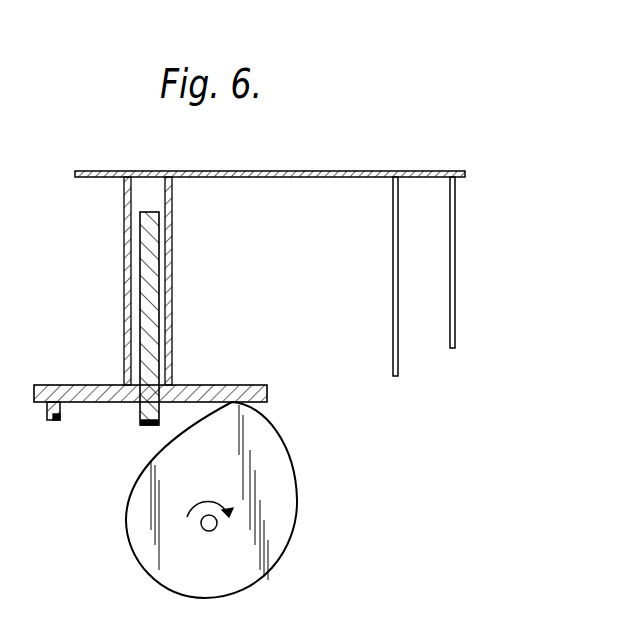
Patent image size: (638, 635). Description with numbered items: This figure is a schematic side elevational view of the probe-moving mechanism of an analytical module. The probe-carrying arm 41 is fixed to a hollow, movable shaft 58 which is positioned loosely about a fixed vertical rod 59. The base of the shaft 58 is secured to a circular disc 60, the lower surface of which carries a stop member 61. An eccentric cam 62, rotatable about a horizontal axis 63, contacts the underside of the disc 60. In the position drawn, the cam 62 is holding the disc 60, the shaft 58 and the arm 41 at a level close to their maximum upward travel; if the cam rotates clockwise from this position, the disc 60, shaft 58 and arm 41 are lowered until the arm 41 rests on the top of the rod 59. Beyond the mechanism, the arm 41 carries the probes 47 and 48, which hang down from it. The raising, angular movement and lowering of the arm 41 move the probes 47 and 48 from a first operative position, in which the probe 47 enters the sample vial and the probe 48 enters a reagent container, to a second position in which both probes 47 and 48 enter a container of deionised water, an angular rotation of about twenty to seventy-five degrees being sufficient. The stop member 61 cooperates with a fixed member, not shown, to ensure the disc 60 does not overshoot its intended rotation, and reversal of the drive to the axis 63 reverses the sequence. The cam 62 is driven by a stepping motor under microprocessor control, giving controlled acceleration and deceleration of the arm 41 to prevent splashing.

The probe-carrying arm 41 is at (318, 170).
The probe 47 is at (455, 283).
The probe 48 is at (393, 317).
The hollow movable shaft 58 is at (172, 283).
The fixed vertical rod 59 is at (148, 296).
The circular disc 60 is at (88, 385).
The stop member 61 is at (53, 422).
The eccentric cam 62 is at (282, 476).
The horizontal axis 63 is at (213, 529).